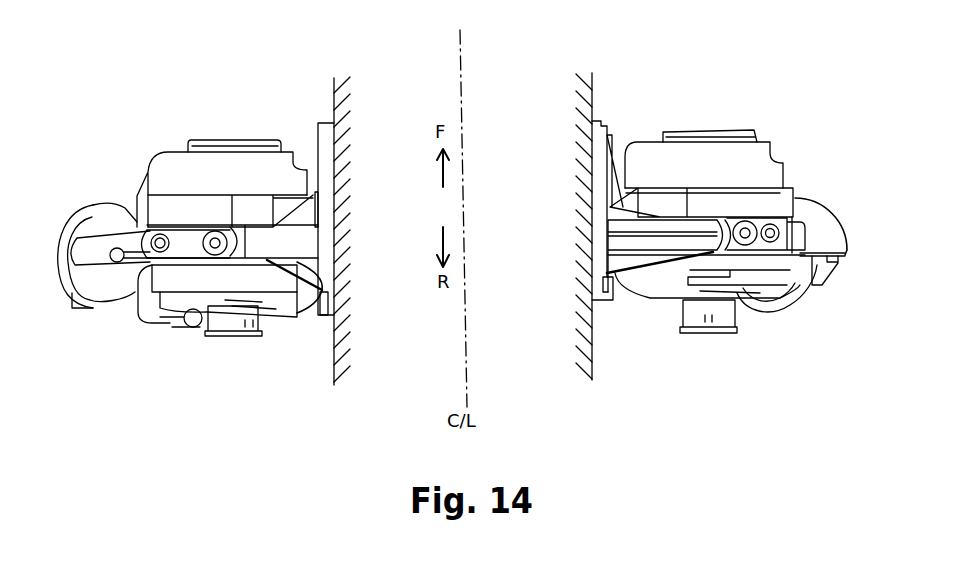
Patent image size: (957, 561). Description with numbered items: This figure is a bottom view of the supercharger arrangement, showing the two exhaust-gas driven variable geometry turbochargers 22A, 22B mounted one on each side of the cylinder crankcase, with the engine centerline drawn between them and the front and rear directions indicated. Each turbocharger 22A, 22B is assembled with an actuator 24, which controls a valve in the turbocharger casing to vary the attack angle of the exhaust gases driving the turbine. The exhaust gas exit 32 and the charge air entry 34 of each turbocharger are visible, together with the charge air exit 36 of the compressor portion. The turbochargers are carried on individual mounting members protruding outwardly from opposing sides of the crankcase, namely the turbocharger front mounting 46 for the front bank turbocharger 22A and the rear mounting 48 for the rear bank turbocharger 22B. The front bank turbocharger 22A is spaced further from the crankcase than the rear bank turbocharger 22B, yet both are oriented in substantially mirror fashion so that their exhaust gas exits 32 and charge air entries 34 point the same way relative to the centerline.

The variable geometry turbocharger 22A is at (808, 181).
The variable geometry turbocharger 22B is at (153, 141).
The actuator 24 is at (100, 267).
The exhaust gas exit 32 is at (240, 143).
The charge air entry 34 is at (233, 317).
The charge air exit 36 is at (160, 325).
The turbocharger front mounting 46 is at (635, 243).
The turbocharger rear mounting 48 is at (297, 313).